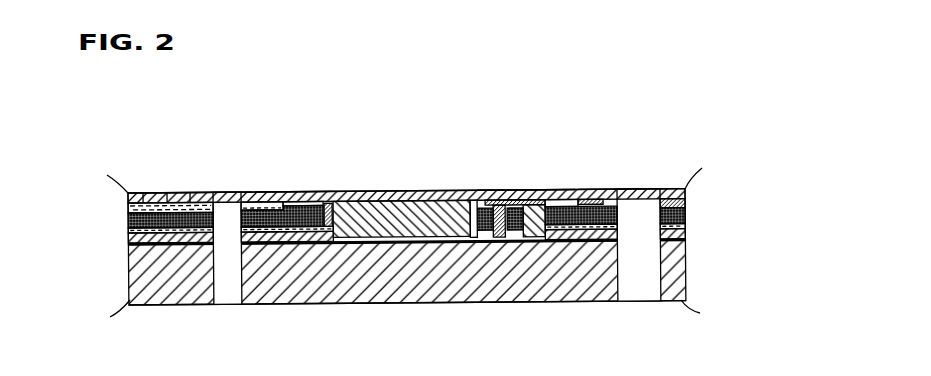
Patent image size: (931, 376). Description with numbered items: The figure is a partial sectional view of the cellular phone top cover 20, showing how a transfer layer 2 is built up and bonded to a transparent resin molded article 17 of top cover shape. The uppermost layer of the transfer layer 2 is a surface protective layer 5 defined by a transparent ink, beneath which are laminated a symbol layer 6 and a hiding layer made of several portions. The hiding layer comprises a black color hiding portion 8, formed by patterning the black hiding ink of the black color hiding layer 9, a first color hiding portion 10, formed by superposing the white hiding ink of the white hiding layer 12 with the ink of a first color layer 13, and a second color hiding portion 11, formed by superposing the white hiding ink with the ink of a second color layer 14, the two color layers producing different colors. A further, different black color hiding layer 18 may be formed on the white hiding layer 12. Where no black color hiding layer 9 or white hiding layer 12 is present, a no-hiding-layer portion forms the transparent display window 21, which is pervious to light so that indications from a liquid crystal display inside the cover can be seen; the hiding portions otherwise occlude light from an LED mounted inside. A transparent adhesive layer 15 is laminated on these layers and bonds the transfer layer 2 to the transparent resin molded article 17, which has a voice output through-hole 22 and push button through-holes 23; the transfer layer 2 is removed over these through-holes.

The transfer layer 2 is at (776, 162).
The surface protective layer 5 is at (686, 194).
The symbol layer 6 is at (143, 193).
The black color hiding portion 8 is at (333, 179).
The black color hiding layer 9 is at (582, 201).
The first color hiding portion 10 is at (688, 179).
The second color hiding portion 11 is at (252, 179).
The white hiding layer 12 is at (684, 224).
The first color layer 13 is at (684, 201).
The second color layer 14 is at (128, 208).
The transparent adhesive layer 15 is at (684, 236).
The transparent resin molded article 17 is at (310, 290).
The black color hiding layer 18 is at (128, 237).
The cellular phone top cover 20 is at (157, 102).
The transparent display window 21 is at (473, 179).
The voice output through-hole 22 is at (223, 290).
The push button through-hole 23 is at (633, 290).